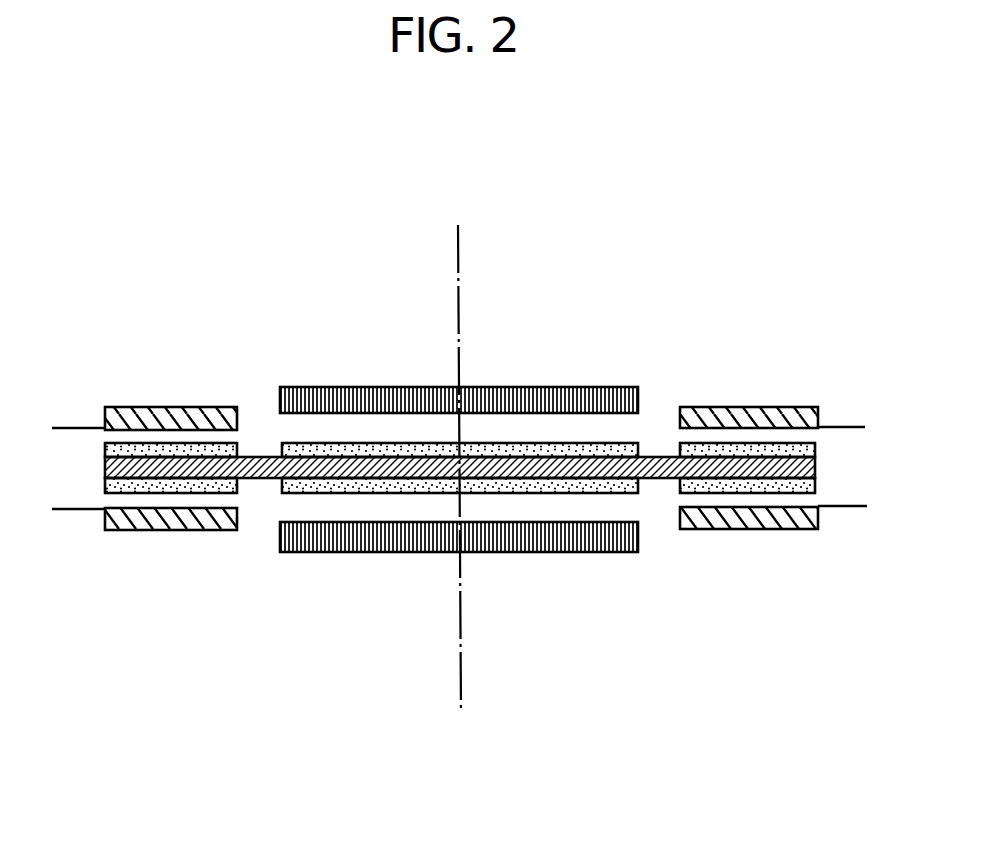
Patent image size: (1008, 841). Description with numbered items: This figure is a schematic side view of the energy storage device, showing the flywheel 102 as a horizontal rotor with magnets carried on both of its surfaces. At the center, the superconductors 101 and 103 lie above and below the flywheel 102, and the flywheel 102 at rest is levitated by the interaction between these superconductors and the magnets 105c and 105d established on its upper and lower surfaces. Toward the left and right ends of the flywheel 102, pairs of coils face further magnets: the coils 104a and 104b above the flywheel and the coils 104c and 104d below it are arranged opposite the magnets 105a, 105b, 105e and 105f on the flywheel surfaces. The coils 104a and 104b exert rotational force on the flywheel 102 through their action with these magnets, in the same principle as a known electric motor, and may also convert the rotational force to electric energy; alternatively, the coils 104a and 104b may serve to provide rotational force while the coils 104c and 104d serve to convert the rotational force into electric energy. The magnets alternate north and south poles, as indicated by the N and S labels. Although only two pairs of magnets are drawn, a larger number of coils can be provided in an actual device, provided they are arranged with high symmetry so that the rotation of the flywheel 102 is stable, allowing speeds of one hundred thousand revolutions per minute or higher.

The superconductor 101 is at (543, 387).
The flywheel 102 is at (460, 384).
The superconductor 103 is at (540, 552).
The coil 104a is at (142, 407).
The coil 104b is at (767, 407).
The coil 104c is at (148, 530).
The coil 104d is at (781, 530).
The magnet 105a is at (207, 443).
The magnet 105b is at (213, 493).
The magnet 105c is at (369, 443).
The magnet 105d is at (393, 493).
The magnet 105e is at (732, 443).
The magnet 105f is at (717, 493).